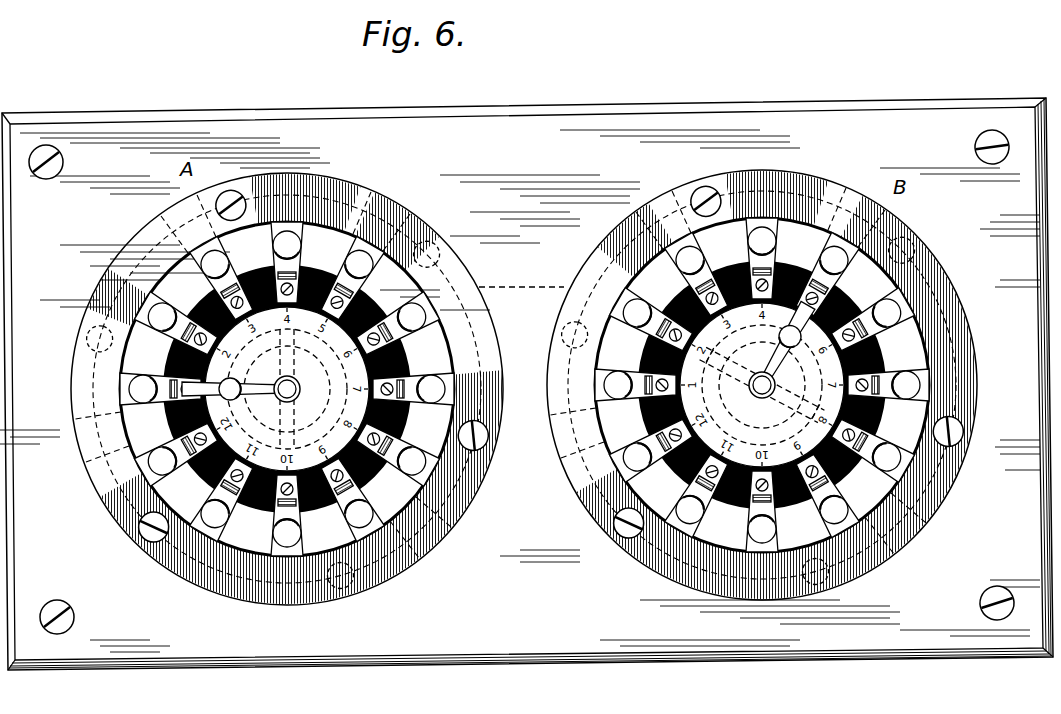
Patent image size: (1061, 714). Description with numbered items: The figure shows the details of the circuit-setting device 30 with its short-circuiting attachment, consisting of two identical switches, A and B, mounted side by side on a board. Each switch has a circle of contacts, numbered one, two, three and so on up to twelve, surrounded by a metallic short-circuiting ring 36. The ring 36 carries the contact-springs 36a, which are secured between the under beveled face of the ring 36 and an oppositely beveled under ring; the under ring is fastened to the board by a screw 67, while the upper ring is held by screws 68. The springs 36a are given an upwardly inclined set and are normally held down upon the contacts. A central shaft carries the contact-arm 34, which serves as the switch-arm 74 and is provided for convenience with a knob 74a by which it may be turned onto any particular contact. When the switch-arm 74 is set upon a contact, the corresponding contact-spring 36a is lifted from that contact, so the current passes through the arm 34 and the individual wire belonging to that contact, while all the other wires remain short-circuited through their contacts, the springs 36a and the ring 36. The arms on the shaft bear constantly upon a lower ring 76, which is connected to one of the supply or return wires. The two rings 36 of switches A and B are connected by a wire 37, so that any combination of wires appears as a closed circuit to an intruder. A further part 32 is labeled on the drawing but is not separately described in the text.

The circuit-setting device 30 is at (526, 384).
The dial disc of indicator B 32 is at (762, 385).
The contact-arm 34 is at (287, 389).
The short-circuiting ring 36 is at (352, 193).
The contact-springs 36a is at (172, 312).
The wire 37 is at (517, 287).
The screw 67 is at (918, 236).
The screws 68 is at (706, 192).
The switch-arm 74 is at (258, 394).
The knob 74a is at (232, 395).
The ring 76 is at (762, 385).